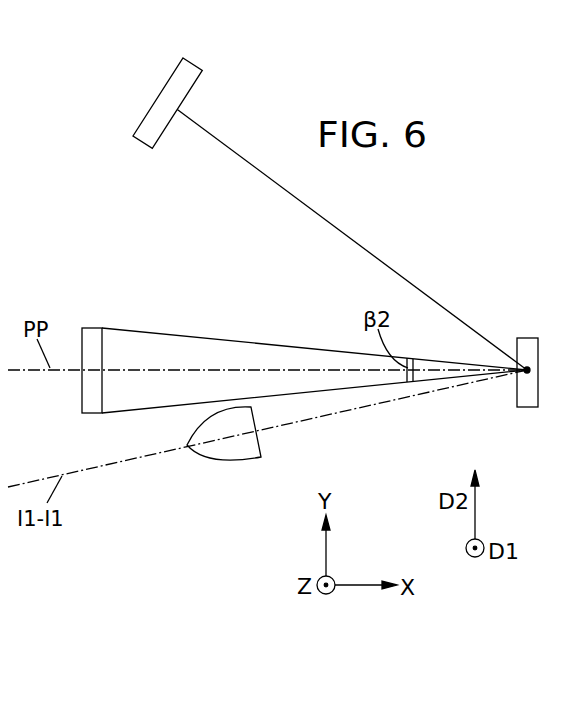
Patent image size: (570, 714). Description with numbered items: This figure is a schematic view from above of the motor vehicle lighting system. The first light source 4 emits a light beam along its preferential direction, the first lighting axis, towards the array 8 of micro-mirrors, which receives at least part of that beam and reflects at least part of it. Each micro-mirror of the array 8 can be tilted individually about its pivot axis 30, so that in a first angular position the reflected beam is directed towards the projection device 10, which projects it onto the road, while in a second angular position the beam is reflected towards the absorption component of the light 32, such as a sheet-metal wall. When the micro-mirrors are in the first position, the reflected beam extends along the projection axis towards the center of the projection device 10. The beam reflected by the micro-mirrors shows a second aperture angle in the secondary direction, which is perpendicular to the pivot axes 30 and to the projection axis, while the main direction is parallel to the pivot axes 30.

The absorption component of the light 32 is at (195, 64).
The projection device 10 is at (92, 327).
The array of micro-mirrors 8 is at (525, 338).
The pivot axis 30 is at (525, 375).
The first light source 4 is at (233, 452).